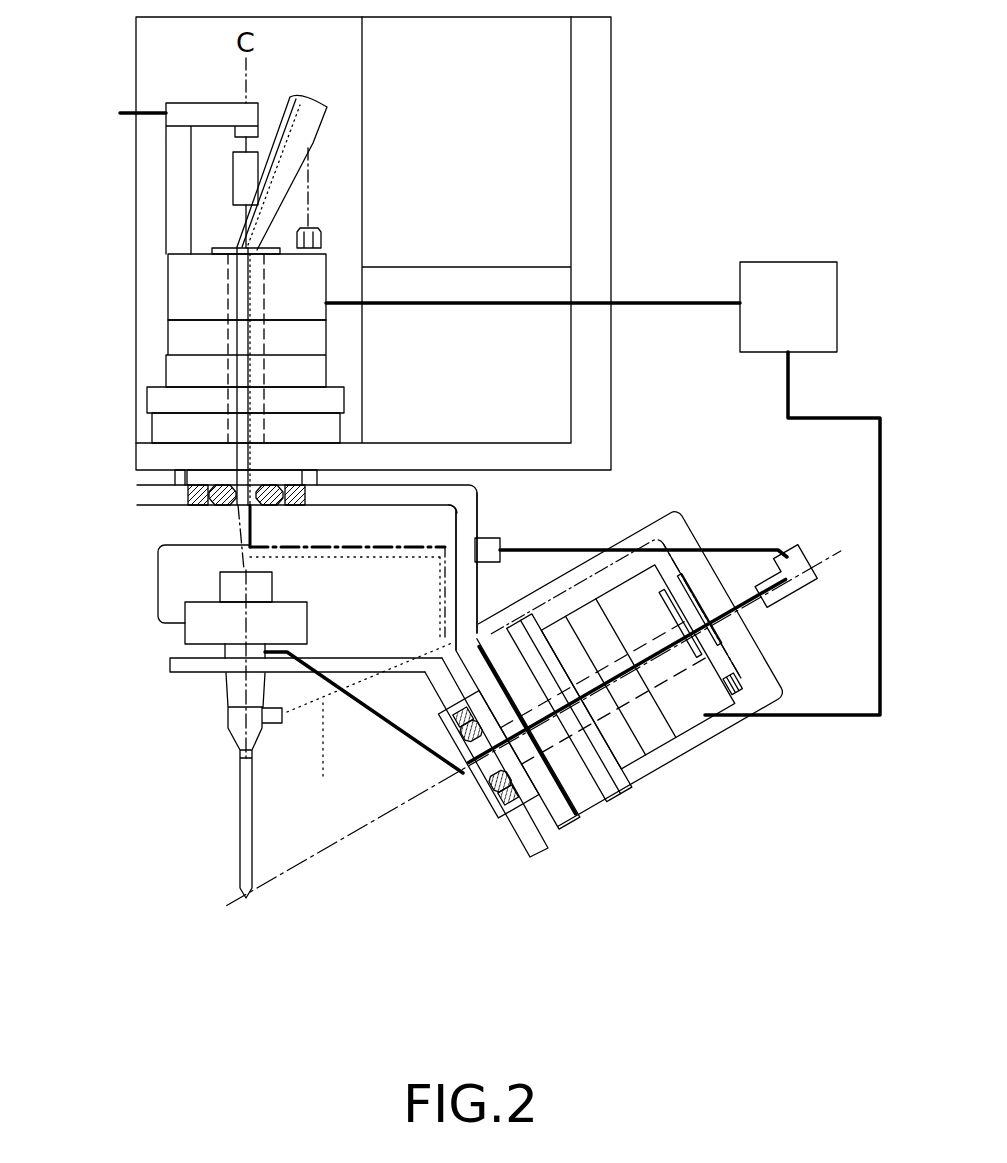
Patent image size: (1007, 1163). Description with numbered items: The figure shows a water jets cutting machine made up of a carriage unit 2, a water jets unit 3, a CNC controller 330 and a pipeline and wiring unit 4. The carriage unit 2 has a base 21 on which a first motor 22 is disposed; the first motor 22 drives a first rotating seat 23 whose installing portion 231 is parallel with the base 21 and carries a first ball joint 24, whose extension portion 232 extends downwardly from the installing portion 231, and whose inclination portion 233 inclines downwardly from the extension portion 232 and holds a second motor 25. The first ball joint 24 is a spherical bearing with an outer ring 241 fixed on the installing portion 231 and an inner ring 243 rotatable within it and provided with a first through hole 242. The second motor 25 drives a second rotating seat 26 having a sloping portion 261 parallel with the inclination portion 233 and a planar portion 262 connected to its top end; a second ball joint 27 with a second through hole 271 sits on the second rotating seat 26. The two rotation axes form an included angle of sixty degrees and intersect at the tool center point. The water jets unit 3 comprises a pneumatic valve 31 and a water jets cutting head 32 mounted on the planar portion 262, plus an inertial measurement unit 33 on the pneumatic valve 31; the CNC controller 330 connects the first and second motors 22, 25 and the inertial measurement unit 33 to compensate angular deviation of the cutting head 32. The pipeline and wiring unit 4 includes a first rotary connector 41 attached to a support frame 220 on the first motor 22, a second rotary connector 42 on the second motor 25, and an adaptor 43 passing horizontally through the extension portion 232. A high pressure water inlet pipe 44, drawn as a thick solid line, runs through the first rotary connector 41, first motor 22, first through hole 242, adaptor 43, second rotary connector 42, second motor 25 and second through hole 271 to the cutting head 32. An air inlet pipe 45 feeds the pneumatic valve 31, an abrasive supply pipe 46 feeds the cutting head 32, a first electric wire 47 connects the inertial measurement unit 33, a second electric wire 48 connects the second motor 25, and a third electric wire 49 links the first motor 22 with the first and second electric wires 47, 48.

The carriage unit 2 is at (642, 130).
The base 21 is at (597, 185).
The first motor 22 is at (168, 272).
The support frame 220 is at (188, 105).
The first rotating seat 23 is at (130, 488).
The installing portion 231 is at (425, 483).
The extension portion 232 is at (473, 513).
The inclination portion 233 is at (565, 817).
The first ball joint 24 is at (237, 458).
The outer ring 241 is at (283, 487).
The first through hole 242 is at (230, 492).
The inner ring 243 is at (195, 488).
The second motor 25 is at (707, 720).
The second rotating seat 26 is at (335, 797).
The sloping portion 261 is at (540, 847).
The planar portion 262 is at (170, 663).
The second ball joint 27 is at (468, 805).
The second through hole 271 is at (495, 797).
The water jets unit 3 is at (234, 735).
The pneumatic valve 31 is at (307, 622).
The water jets cutting head 32 is at (233, 690).
The inertial measurement unit 33 is at (220, 585).
The CNC controller 330 is at (788, 260).
The pipeline and wiring unit 4 is at (529, 695).
The first rotary connector 41 is at (233, 173).
The second rotary connector 42 is at (797, 548).
The adaptor 43 is at (490, 538).
The high pressure water inlet pipe 44 is at (738, 548).
The air inlet pipe 45 is at (158, 573).
The abrasive supply pipe 46 is at (351, 683).
The first electric wire 47 is at (247, 565).
The second electric wire 48 is at (735, 650).
The third electric wire 49 is at (313, 147).